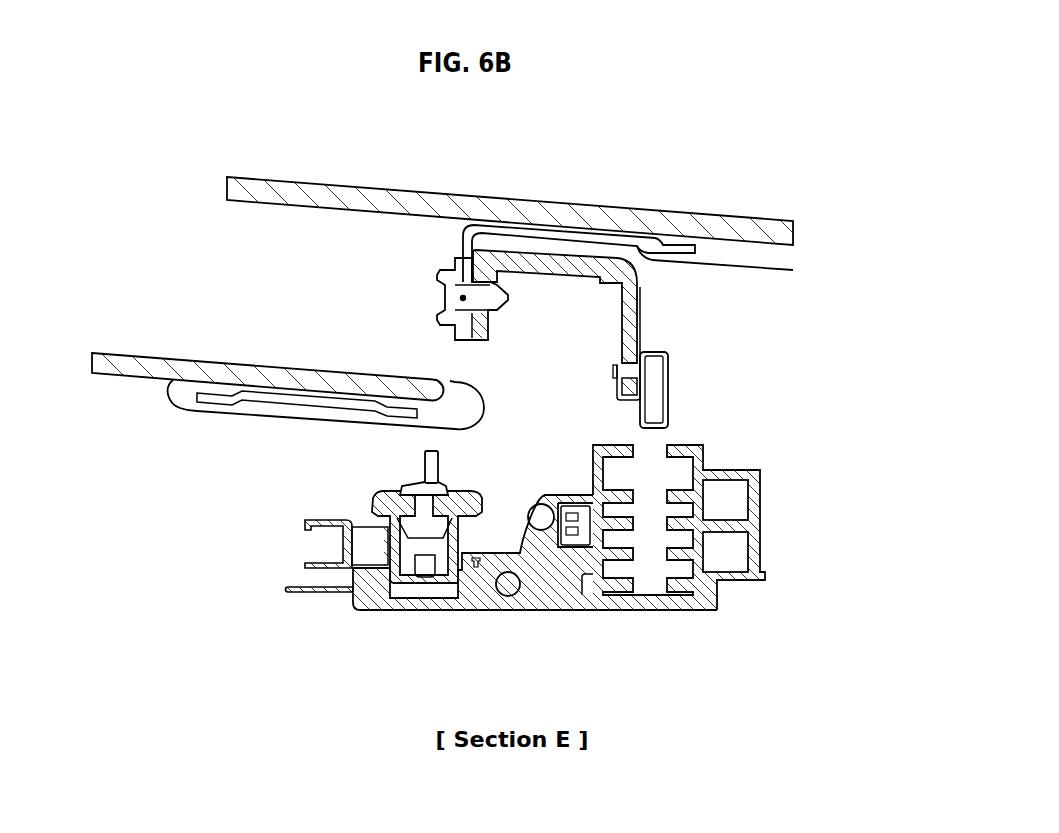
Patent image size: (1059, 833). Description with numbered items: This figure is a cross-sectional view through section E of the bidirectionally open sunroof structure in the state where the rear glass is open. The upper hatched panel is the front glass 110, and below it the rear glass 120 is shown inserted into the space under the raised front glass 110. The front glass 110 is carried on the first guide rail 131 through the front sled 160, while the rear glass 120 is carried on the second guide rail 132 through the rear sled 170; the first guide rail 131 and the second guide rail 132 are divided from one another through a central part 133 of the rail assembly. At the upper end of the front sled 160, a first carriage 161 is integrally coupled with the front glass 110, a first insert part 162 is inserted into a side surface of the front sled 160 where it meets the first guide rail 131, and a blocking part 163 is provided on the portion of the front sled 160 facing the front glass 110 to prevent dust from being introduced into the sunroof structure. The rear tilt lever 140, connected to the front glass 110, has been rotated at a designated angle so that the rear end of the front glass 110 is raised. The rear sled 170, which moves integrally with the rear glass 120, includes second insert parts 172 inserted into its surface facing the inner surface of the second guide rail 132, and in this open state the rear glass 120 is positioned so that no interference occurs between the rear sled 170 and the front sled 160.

The front glass 110 is at (353, 197).
The rear glass 120 is at (307, 381).
The first guide rail 131 is at (640, 598).
The second guide rail 132 is at (368, 552).
The central part 133 is at (553, 573).
The rear tilt lever 140 is at (670, 390).
The front sled 160 is at (707, 497).
The first carriage 161 is at (531, 252).
The first insert part 162 is at (577, 497).
The blocking part 163 is at (583, 235).
The rear sled 170 is at (353, 583).
The second insert parts 172 is at (475, 592).